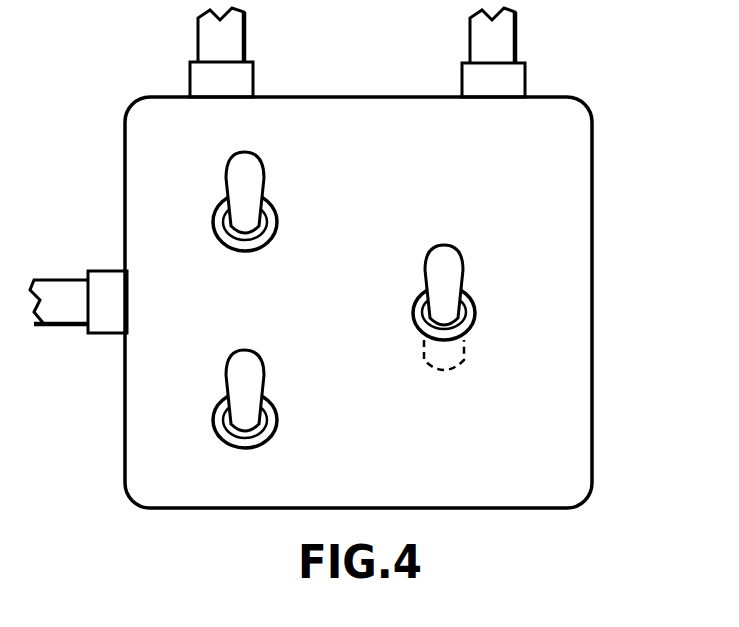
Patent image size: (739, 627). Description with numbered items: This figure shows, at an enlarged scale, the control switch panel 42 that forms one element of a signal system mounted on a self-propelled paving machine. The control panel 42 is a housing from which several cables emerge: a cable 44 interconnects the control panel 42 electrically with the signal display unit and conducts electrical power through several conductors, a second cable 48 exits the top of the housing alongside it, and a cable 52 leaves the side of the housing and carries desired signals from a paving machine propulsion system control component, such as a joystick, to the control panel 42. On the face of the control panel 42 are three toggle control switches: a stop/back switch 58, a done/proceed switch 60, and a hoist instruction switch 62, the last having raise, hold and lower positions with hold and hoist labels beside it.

The control switch panel 42 is at (592, 302).
The cable 44 is at (246, 37).
The communication cable connector 48 is at (517, 36).
The cable 52 is at (60, 280).
The stop/back switch 58 is at (265, 368).
The done/proceed switch 60 is at (265, 174).
The hoist instruction switch 62 is at (425, 268).